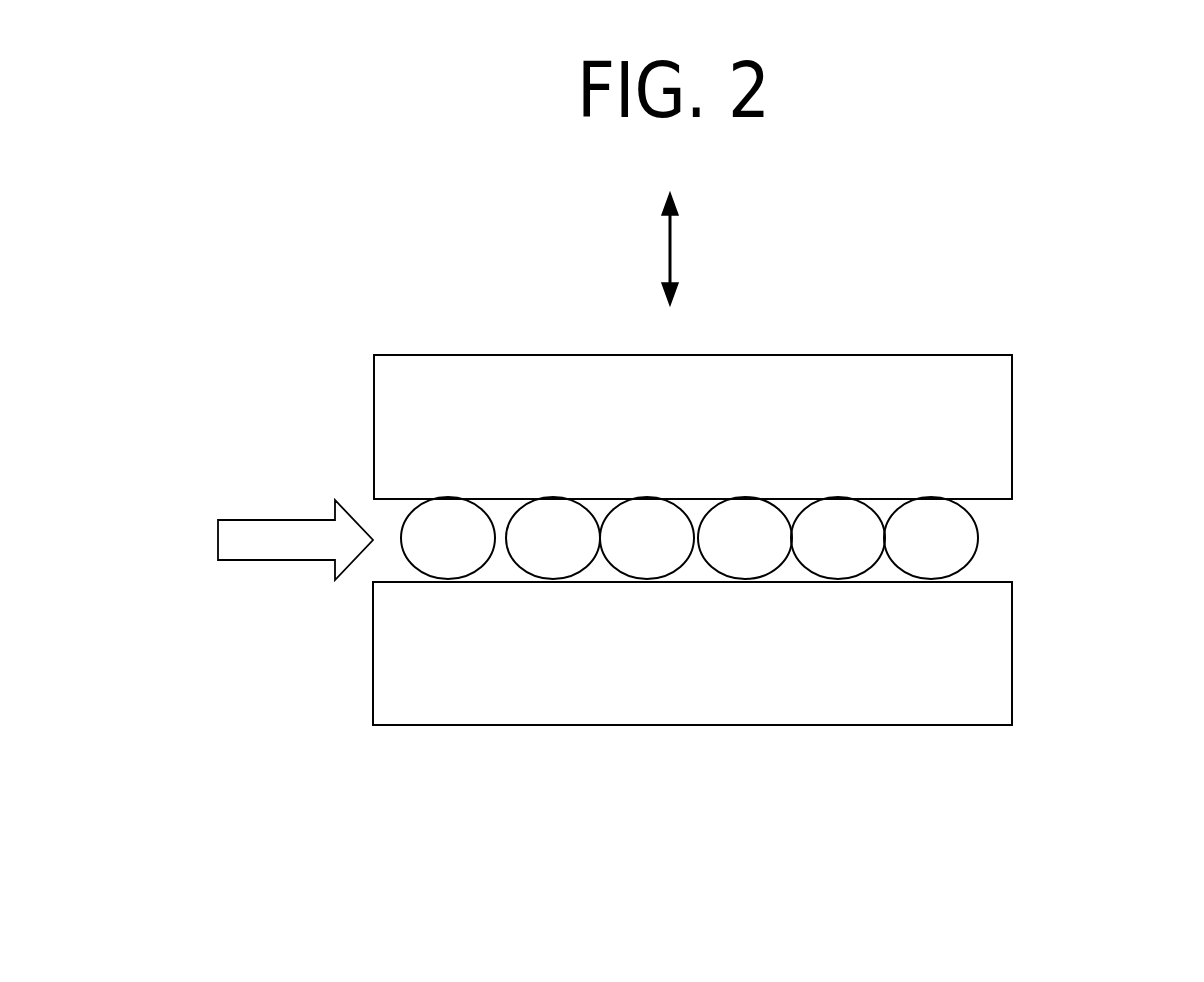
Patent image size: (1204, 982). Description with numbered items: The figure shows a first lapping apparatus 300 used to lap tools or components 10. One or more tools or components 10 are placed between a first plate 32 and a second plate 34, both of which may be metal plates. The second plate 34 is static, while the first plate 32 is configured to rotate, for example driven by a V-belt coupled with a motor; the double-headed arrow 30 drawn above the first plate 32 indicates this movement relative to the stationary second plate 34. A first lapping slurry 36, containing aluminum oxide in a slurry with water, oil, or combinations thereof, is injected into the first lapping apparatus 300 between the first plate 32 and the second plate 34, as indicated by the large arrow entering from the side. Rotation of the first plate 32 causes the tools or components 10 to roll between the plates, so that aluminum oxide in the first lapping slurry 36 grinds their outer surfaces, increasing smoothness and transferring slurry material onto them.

The first lapping apparatus 300 is at (256, 360).
The first plate 32 is at (976, 357).
The second plate 34 is at (415, 730).
The tools or components 10 is at (972, 541).
The compression direction 30 is at (676, 246).
The first lapping slurry 36 is at (260, 567).